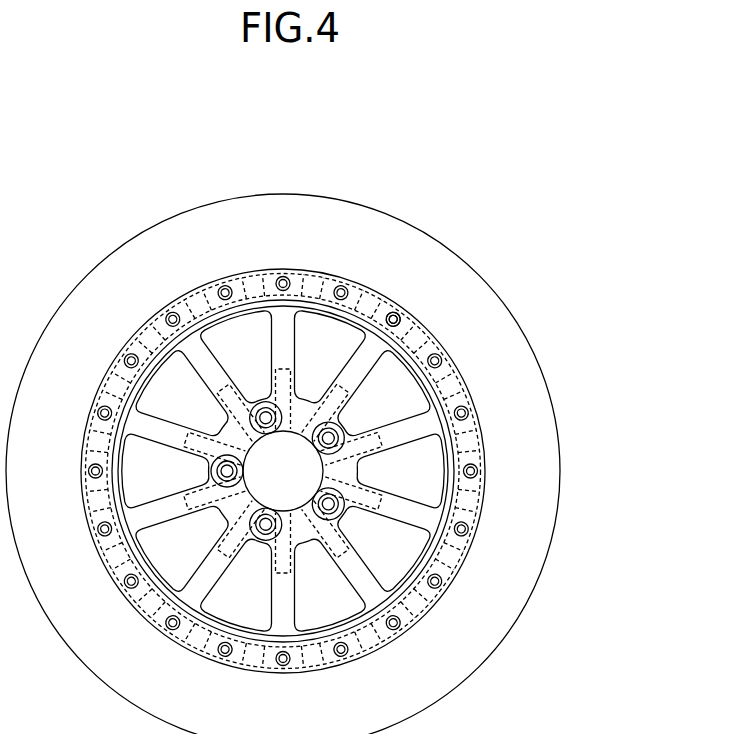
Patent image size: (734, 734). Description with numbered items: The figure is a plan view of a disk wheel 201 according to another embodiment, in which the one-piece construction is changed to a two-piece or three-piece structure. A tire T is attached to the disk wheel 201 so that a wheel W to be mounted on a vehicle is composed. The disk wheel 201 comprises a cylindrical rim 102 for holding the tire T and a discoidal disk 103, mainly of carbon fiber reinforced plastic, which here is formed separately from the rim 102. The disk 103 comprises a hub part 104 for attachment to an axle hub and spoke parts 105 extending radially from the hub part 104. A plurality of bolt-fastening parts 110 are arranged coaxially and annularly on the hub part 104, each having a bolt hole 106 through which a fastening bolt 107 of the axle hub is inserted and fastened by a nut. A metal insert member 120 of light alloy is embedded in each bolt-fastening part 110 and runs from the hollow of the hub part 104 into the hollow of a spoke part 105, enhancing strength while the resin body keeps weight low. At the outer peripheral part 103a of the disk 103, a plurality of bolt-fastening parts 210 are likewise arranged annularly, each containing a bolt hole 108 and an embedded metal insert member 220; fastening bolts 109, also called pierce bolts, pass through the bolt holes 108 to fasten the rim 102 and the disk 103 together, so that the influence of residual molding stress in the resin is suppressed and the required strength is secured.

The wheel W is at (452, 250).
The tire T is at (538, 390).
The disk wheel 201 is at (272, 246).
The rim 102 is at (194, 297).
The disk 103 is at (255, 303).
The peripheral part 103a is at (459, 384).
The hub part 104 is at (348, 470).
The spoke part 105 is at (390, 512).
The bolt hole 106 is at (262, 421).
The fastening bolt 107 is at (243, 438).
The bolt hole 108 is at (414, 316).
The fastening bolt 109 is at (394, 312).
The bolt-fastening part 110 is at (222, 410).
The insert member 120 is at (168, 345).
The bolt-fastening part 210 is at (440, 347).
The insert member 220 is at (382, 292).